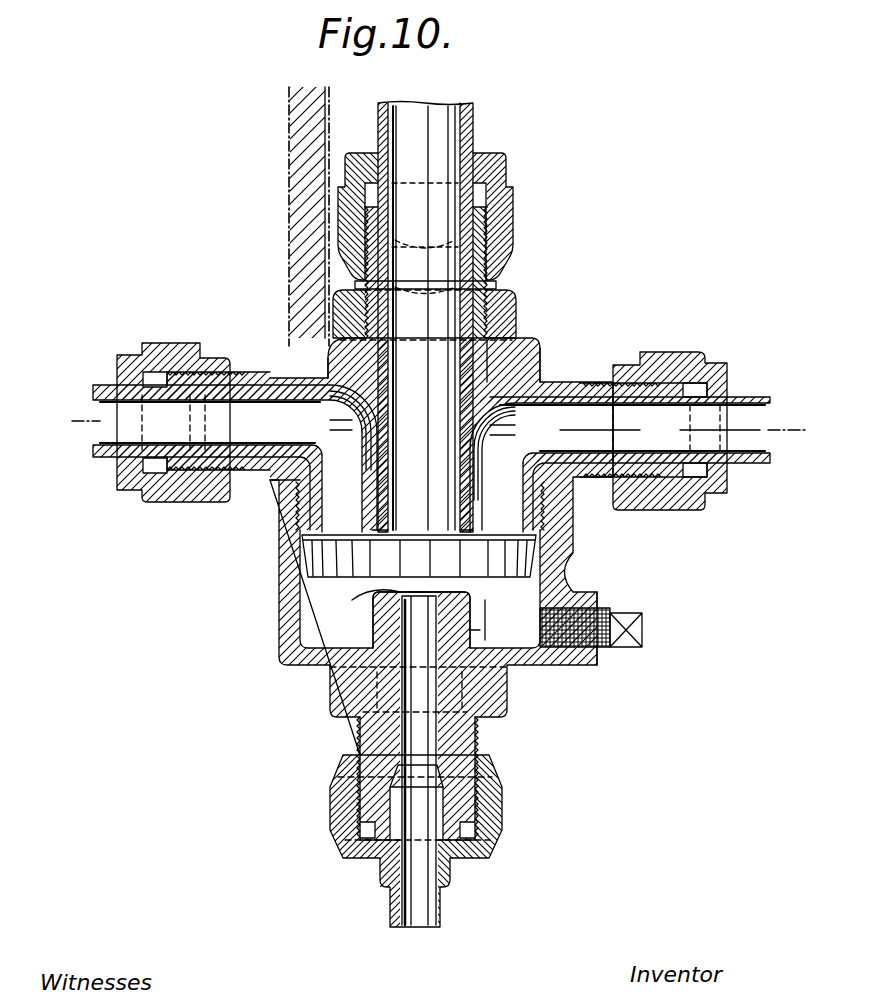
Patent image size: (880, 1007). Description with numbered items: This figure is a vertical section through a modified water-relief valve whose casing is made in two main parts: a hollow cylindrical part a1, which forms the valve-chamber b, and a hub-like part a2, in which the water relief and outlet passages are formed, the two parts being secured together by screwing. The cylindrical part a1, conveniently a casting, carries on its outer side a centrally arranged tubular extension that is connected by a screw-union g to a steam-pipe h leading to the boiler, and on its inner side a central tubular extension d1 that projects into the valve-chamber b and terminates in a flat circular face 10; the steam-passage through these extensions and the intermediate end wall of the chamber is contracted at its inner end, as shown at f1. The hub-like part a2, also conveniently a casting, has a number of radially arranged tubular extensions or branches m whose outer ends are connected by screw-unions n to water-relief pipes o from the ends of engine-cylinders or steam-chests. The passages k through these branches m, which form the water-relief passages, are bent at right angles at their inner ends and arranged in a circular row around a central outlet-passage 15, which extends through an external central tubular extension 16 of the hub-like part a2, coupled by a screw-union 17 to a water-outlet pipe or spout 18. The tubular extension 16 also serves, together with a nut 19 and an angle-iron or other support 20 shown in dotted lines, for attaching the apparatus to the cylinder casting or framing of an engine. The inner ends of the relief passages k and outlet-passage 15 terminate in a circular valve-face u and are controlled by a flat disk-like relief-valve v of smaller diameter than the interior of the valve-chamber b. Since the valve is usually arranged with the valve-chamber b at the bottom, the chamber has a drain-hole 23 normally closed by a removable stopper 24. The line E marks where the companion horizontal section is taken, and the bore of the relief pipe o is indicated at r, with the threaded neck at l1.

The flat circular face 10 is at (451, 590).
The central outlet-passage 15 is at (425, 318).
The tubular extension 16 is at (498, 256).
The screw-union 17 is at (500, 216).
The water-outlet pipe or spout 18 is at (462, 131).
The nut 19 is at (505, 322).
The angle-iron or other support 20 is at (301, 279).
The drain-hole 23 is at (590, 604).
The removable stopper 24 is at (601, 655).
The hollow cylindrical part a1 is at (292, 578).
The hub-like part a2 is at (547, 392).
The valve-chamber b is at (497, 616).
The central tubular extension d1 is at (472, 631).
The section line E E is at (426, 427).
The contracted part of steam-passage f1 is at (370, 596).
The screw-union g is at (335, 803).
The steam-pipe h is at (415, 900).
The water-relief passages k is at (391, 461).
The threaded neck l1 is at (372, 740).
The radially-arranged tubular extensions or branches m is at (263, 378).
The screw-unions n is at (185, 354).
The water-relief pipes o is at (431, 430).
The pipe bore r is at (660, 430).
The circular valve-face u is at (464, 531).
The flat disk-like relief-valve v is at (419, 556).